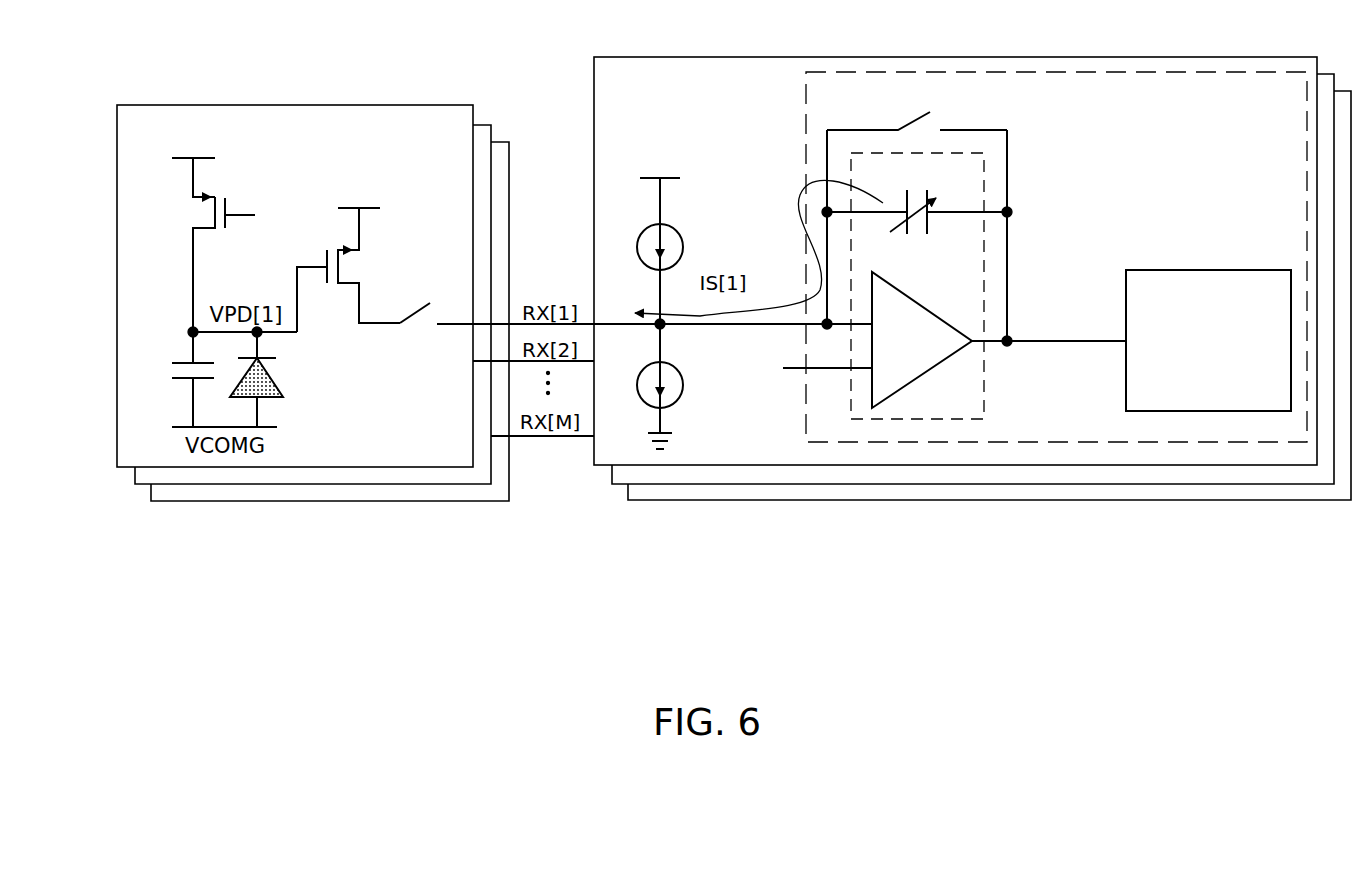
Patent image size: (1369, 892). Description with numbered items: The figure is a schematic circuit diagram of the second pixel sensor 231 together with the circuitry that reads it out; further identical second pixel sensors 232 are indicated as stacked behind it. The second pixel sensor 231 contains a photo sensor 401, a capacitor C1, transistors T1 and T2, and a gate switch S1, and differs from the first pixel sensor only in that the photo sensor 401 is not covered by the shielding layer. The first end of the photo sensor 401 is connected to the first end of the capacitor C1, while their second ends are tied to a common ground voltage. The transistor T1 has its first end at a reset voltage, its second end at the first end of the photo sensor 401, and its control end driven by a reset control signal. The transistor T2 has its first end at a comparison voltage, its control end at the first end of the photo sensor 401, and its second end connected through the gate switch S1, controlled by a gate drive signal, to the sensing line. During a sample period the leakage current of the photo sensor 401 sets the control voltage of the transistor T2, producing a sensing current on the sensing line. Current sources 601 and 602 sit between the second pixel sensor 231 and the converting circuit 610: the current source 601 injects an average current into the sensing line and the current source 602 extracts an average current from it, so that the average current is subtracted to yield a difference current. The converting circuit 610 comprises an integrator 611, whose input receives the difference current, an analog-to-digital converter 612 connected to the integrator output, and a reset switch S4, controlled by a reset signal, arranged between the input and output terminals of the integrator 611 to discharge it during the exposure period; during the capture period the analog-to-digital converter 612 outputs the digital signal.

The second pixel sensor 231 is at (231, 105).
The pixel circuits 232 is at (481, 125).
The transistor T1 is at (212, 205).
The transistor T2 is at (345, 248).
The capacitor C1 is at (182, 363).
The photo sensor 401 is at (283, 392).
The gate switch S1 is at (413, 308).
The current source 601 is at (639, 232).
The current source 602 is at (637, 385).
The converting circuit 610 is at (1049, 57).
The integrator 611 is at (925, 420).
The analog-to-digital converter 612 is at (1206, 270).
The reset switch S4 is at (907, 122).